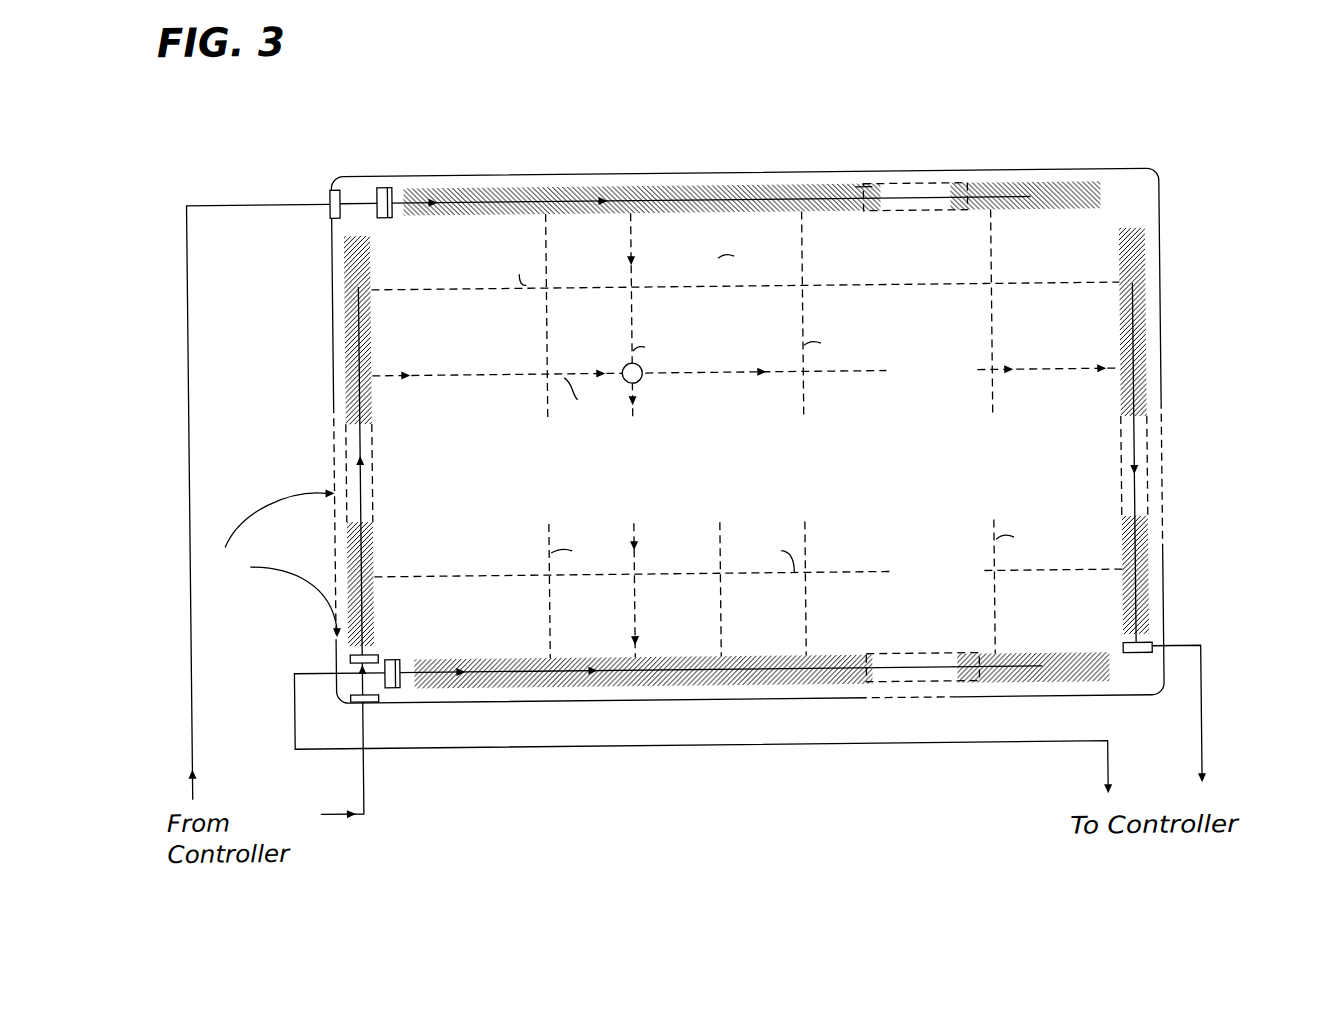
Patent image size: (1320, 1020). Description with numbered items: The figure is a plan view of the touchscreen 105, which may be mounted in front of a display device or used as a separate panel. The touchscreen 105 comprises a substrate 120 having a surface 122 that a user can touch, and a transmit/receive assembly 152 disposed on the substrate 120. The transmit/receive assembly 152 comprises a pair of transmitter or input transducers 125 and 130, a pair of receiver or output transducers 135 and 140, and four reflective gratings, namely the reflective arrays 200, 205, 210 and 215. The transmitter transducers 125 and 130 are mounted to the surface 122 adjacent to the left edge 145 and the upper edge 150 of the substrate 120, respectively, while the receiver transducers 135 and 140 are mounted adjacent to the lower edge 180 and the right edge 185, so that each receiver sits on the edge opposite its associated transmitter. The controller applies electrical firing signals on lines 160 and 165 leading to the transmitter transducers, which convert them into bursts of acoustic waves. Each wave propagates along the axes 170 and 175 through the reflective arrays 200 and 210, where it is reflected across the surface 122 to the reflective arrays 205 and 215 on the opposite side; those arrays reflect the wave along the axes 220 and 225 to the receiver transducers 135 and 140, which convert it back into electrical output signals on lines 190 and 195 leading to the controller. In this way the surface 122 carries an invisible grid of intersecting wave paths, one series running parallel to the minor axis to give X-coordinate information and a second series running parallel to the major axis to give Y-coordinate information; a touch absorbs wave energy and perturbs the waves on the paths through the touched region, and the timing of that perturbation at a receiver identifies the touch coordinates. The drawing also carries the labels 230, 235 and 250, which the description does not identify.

The touchscreen 105 is at (158, 147).
The substrate 120 is at (911, 173).
The surface 122 is at (940, 230).
The transmitter transducer 125 is at (386, 184).
The transmitter transducer 130 is at (349, 653).
The receiver transducer 135 is at (388, 684).
The receiver transducer 140 is at (1128, 658).
The left edge 145 is at (335, 277).
The upper edge 150 is at (700, 172).
The transmit/receive assembly 152 is at (271, 563).
The line 160 is at (190, 381).
The line 165 is at (363, 780).
The axis 170 is at (858, 188).
The axis 175 is at (364, 339).
The lower edge 180 is at (602, 702).
The right edge 185 is at (1162, 213).
The line 190 is at (757, 745).
The line 195 is at (1200, 738).
The reflective array 200 is at (580, 184).
The reflective array 205 is at (678, 658).
The reflective array 210 is at (369, 386).
The reflective array 215 is at (1121, 396).
The axis 220 is at (750, 666).
The axis 225 is at (1126, 320).
The transducer 230 is at (333, 192).
The transducer 235 is at (349, 680).
The touch location 250 is at (643, 382).